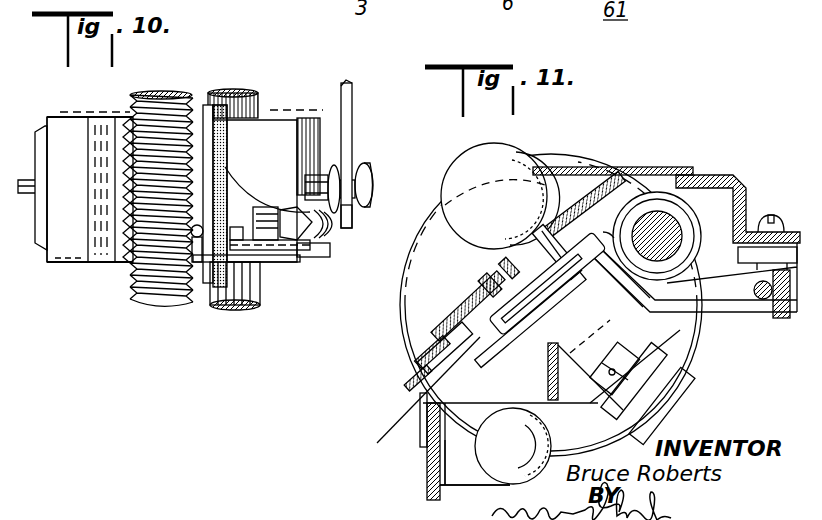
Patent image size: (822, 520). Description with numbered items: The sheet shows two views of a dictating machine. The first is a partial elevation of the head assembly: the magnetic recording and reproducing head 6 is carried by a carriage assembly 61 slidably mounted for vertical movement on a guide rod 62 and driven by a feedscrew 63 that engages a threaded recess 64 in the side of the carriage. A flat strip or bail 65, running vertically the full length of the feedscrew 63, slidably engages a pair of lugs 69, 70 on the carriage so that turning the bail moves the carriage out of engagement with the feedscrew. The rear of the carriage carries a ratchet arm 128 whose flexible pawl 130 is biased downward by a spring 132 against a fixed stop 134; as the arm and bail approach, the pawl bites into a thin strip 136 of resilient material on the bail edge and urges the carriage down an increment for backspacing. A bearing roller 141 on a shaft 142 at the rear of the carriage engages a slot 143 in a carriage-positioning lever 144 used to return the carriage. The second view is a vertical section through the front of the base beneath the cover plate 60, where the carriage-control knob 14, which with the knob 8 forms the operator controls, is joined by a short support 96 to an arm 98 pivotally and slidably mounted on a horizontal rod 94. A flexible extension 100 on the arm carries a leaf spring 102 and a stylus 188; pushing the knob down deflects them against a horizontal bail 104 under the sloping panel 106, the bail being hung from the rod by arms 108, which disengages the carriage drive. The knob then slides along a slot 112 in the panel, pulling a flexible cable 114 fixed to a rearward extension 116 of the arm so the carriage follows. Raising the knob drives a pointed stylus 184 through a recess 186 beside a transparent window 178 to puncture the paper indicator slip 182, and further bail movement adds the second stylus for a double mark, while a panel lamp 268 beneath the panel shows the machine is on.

In FIG. 10, the recording and reproducing head 6 is at (40, 162).
In FIG. 10, the carriage assembly 61 is at (70, 268).
In FIG. 10, the guide rod 62 is at (272, 82).
In FIG. 10, the feedscrew 63 is at (155, 115).
In FIG. 10, the threaded recess 64 is at (122, 147).
In FIG. 10, the bail 65 is at (210, 120).
In FIG. 10, the lug 69 is at (253, 273).
In FIG. 10, the lug 70 is at (198, 240).
In FIG. 10, the ratchet arm 128 is at (318, 252).
In FIG. 10, the flexible pawl 130 is at (267, 203).
In FIG. 10, the spring 132 is at (332, 230).
In FIG. 10, the fixed stop 134 is at (272, 232).
In FIG. 10, the thin strip of resilient material 136 is at (220, 107).
In FIG. 10, the bearing roller 141 is at (367, 175).
In FIG. 10, the shaft 142 is at (315, 180).
In FIG. 10, the slot 143 is at (347, 210).
In FIG. 10, the carriage-positioning lever 144 is at (347, 93).
In FIG. 11, the knob 8 is at (400, 307).
In FIG. 11, the carriage-control knob 14 is at (500, 153).
In FIG. 11, the cover plate 60 is at (793, 220).
In FIG. 11, the rod 94 is at (663, 227).
In FIG. 11, the support 96 is at (552, 223).
In FIG. 11, the arm 98 is at (585, 260).
In FIG. 11, the flexible extension 100 is at (580, 287).
In FIG. 11, the leaf spring 102 is at (550, 342).
In FIG. 11, the bail 104 is at (547, 395).
In FIG. 11, the sloping panel 106 is at (632, 168).
In FIG. 11, the arms 108 is at (632, 315).
In FIG. 11, the slot 112 is at (545, 260).
In FIG. 11, the flexible cable 114 is at (772, 293).
In FIG. 11, the rearward extension 116 is at (743, 310).
In FIG. 11, the transparent plastic window 178 is at (420, 333).
In FIG. 11, the paper indicator slip 182 is at (385, 428).
In FIG. 11, the pointed stylus 184 is at (448, 358).
In FIG. 11, the recess 186 is at (475, 310).
In FIG. 11, the stylus 188 is at (510, 353).
In FIG. 11, the panel lamp 268 is at (490, 460).